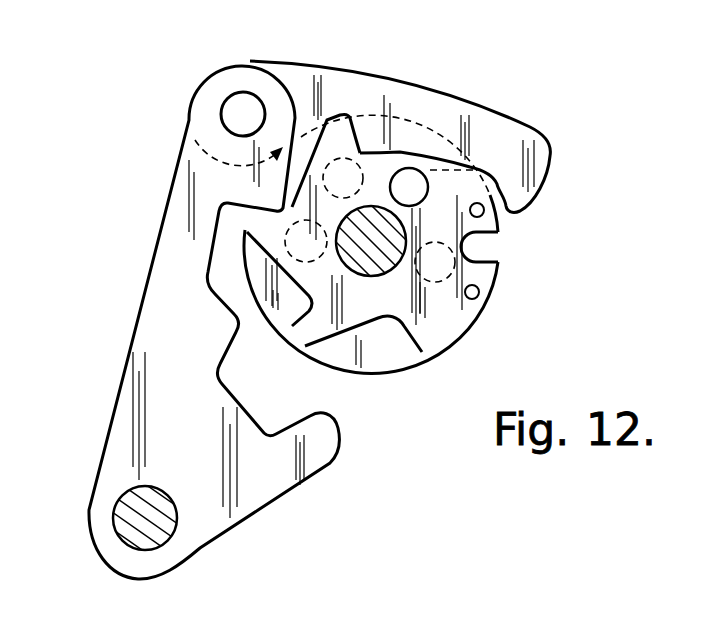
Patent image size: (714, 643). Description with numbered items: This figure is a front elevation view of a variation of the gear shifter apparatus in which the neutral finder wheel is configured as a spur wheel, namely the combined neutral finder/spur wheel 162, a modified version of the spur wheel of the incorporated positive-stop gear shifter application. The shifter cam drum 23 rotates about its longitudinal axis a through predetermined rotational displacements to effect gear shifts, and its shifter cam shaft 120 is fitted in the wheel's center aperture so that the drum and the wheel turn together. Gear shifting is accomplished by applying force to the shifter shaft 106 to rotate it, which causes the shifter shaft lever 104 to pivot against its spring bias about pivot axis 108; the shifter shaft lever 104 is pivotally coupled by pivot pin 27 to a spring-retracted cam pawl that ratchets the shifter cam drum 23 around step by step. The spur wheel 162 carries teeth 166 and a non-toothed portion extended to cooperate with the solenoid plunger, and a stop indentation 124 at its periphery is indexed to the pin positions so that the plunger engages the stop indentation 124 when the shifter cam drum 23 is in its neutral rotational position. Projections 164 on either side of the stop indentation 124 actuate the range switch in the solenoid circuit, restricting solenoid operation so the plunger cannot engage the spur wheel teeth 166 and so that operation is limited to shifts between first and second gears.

The shifter shaft lever 104 is at (199, 417).
The pivot pin 27 is at (221, 113).
The shifter cam shaft 120 is at (345, 214).
The combined neutral finder/spur wheel 162 is at (387, 153).
The shifter cam drum 23 is at (366, 370).
The spur wheel teeth 166 is at (358, 150).
The stop indentation 124 is at (480, 250).
The projections 164 is at (500, 225).
The longitudinal axis a is at (372, 238).
The pivot axis 108 is at (146, 519).
The shifter shaft 106 is at (178, 542).